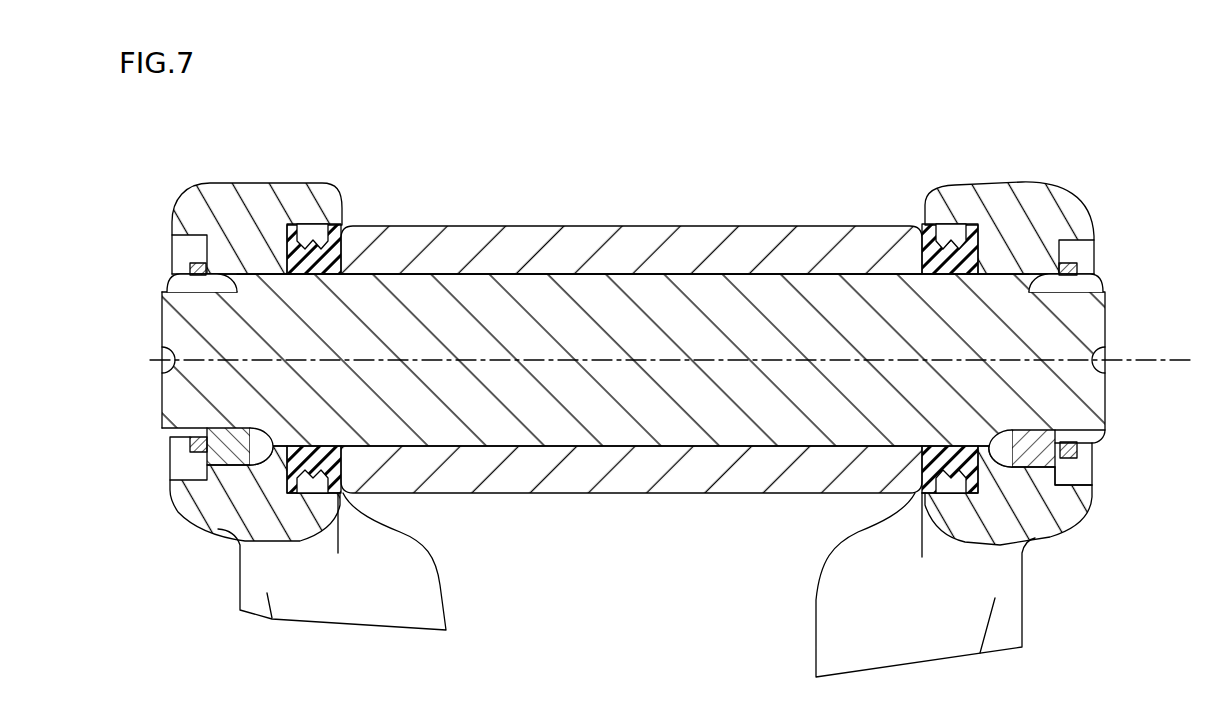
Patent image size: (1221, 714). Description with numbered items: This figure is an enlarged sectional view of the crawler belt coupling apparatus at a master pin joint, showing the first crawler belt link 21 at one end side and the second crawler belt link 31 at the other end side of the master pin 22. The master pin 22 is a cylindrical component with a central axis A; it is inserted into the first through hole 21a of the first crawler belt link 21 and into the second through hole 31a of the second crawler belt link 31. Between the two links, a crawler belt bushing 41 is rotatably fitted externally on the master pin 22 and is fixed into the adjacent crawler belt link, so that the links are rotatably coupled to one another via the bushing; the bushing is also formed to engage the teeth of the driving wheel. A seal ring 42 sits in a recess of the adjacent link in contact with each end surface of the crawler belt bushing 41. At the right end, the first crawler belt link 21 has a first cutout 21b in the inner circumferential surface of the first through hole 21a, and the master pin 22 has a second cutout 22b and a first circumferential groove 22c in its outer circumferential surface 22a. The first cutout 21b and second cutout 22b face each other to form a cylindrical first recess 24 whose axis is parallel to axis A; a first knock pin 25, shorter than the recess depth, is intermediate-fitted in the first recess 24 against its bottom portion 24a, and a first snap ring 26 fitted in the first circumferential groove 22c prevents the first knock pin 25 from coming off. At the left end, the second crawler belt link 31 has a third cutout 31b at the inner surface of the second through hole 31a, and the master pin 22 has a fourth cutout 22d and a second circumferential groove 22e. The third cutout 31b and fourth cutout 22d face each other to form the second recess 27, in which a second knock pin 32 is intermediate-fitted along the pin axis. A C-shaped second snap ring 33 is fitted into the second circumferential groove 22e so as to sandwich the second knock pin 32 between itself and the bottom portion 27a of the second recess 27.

The first crawler belt link 21 is at (1044, 339).
The first through hole 21a is at (1040, 280).
The first cutout 21b is at (1003, 470).
The master pin 22 is at (634, 360).
The outer circumferential surface 22a is at (870, 363).
The second cutout 22b is at (1033, 440).
The first circumferential groove 22c is at (1064, 442).
The fourth cutout 22d is at (228, 428).
The second circumferential groove 22e is at (191, 437).
The first recess 24 is at (1071, 462).
The bottom portion 24a is at (975, 450).
The first knock pin 25 is at (1053, 468).
The first snap ring 26 is at (1078, 442).
The second recess 27 is at (223, 425).
The bottom portion 27a is at (243, 425).
The second crawler belt link 31 is at (221, 337).
The second through hole 31a is at (162, 291).
The third cutout 31b is at (240, 467).
The second knock pin 32 is at (237, 450).
The second snap ring 33 is at (190, 443).
The crawler belt bushing 41 is at (626, 255).
The seal ring 42 is at (338, 258).
The central axis of master pin A is at (684, 367).